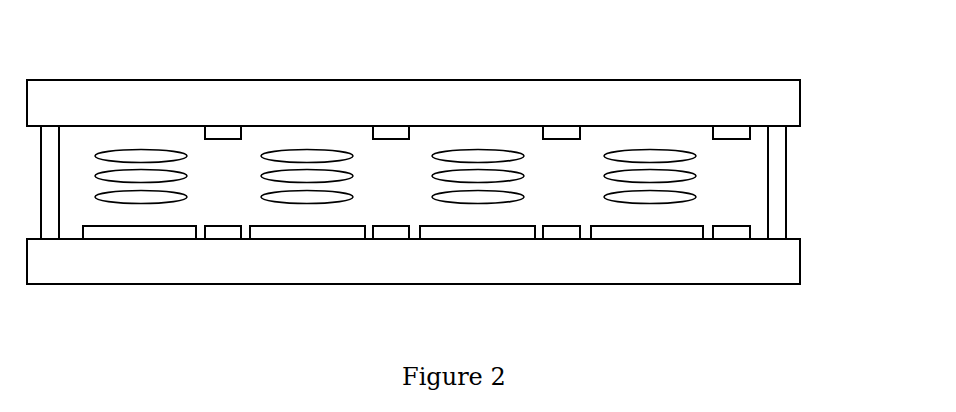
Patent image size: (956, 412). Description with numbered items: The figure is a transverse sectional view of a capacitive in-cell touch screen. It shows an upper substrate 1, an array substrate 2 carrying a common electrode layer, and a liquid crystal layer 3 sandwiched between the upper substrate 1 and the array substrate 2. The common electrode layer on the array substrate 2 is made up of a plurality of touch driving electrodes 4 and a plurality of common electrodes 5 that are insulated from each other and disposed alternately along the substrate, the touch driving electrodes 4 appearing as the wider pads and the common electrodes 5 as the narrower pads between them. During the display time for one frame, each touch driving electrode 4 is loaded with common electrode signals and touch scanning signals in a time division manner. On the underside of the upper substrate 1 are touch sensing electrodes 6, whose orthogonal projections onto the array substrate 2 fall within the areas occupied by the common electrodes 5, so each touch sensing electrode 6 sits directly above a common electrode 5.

The upper substrate 1 is at (447, 86).
The array substrate 2 is at (447, 245).
The liquid crystal layer 3 is at (696, 174).
The touch driving electrode 4 is at (386, 280).
The common electrode 5 is at (477, 280).
The touch sensing electrode 6 is at (477, 83).